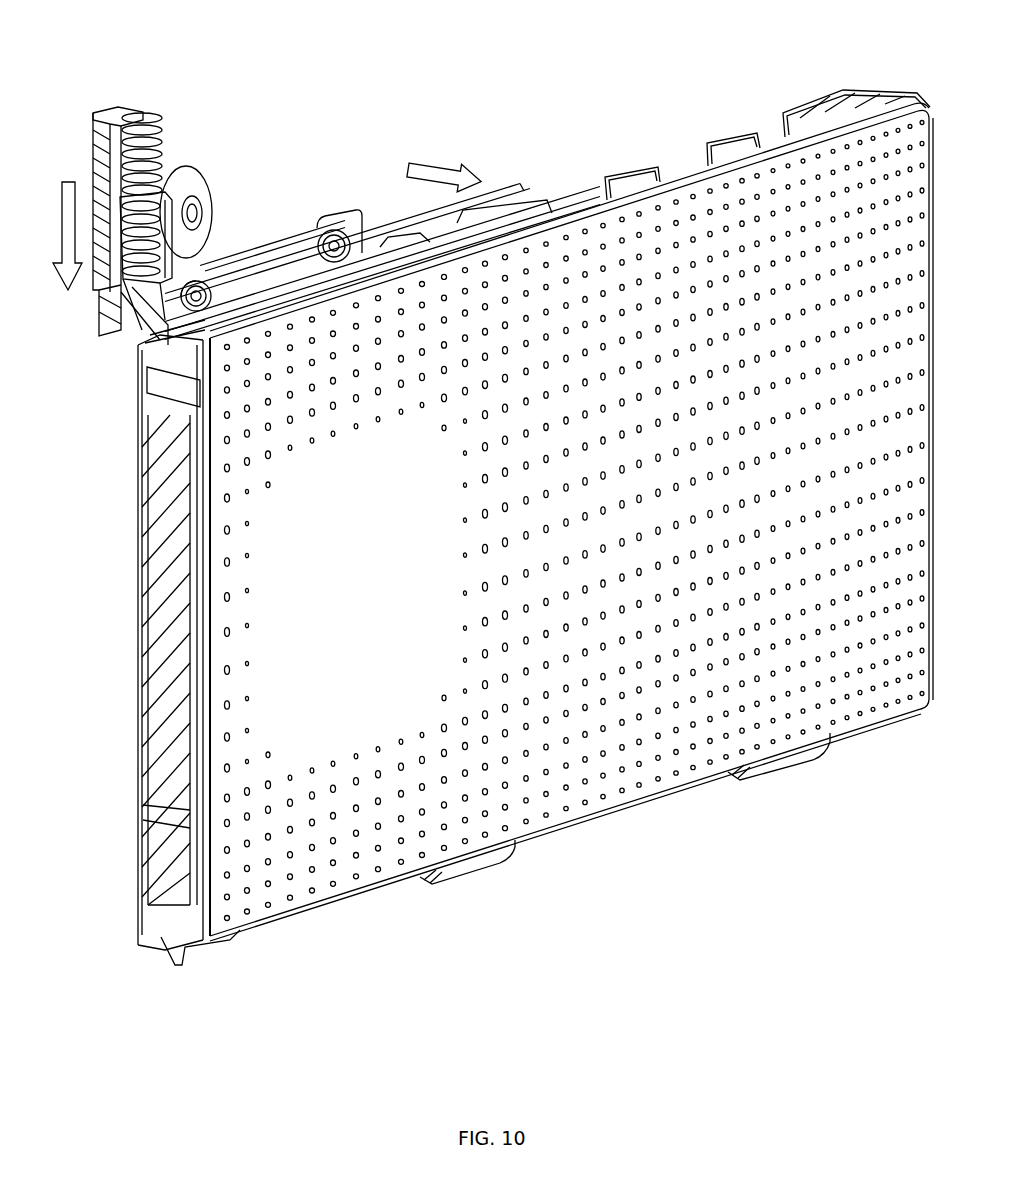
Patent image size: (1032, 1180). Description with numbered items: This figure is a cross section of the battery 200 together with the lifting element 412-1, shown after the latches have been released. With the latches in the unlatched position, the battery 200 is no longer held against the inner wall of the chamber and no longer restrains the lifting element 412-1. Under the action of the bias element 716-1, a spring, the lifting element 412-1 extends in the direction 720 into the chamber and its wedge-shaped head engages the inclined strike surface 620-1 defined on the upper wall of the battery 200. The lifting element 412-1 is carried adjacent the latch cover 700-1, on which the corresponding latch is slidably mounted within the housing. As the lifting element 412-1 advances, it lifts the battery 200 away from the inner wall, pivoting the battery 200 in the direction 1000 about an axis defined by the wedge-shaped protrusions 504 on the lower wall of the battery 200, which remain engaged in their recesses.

The battery 200 is at (387, 572).
The protrusion 504 is at (190, 948).
The inclined strike surface 620-1 is at (147, 346).
The lifting element 412-1 is at (130, 337).
The latch cover 700-1 is at (110, 118).
The bias element 716-1 is at (150, 117).
The direction 720 is at (51, 236).
The direction 1000 is at (444, 163).